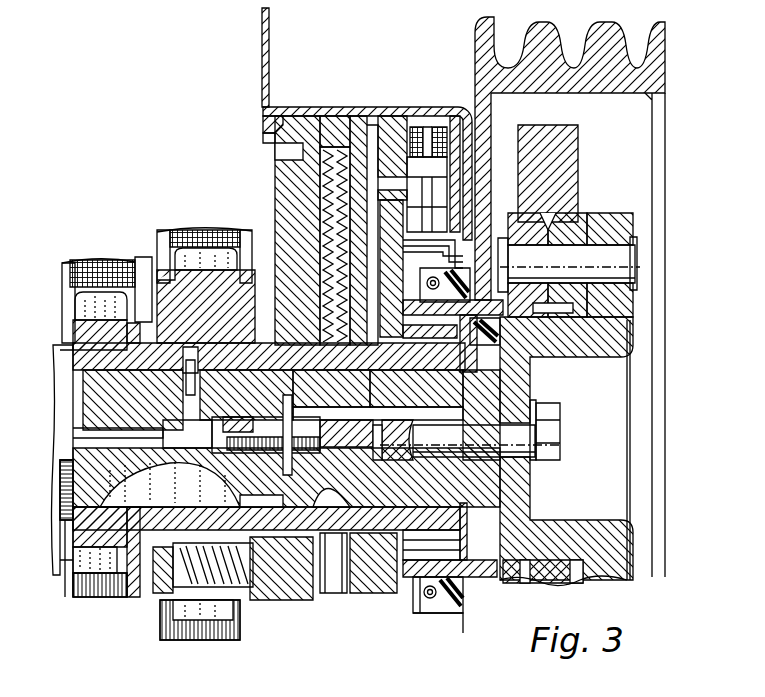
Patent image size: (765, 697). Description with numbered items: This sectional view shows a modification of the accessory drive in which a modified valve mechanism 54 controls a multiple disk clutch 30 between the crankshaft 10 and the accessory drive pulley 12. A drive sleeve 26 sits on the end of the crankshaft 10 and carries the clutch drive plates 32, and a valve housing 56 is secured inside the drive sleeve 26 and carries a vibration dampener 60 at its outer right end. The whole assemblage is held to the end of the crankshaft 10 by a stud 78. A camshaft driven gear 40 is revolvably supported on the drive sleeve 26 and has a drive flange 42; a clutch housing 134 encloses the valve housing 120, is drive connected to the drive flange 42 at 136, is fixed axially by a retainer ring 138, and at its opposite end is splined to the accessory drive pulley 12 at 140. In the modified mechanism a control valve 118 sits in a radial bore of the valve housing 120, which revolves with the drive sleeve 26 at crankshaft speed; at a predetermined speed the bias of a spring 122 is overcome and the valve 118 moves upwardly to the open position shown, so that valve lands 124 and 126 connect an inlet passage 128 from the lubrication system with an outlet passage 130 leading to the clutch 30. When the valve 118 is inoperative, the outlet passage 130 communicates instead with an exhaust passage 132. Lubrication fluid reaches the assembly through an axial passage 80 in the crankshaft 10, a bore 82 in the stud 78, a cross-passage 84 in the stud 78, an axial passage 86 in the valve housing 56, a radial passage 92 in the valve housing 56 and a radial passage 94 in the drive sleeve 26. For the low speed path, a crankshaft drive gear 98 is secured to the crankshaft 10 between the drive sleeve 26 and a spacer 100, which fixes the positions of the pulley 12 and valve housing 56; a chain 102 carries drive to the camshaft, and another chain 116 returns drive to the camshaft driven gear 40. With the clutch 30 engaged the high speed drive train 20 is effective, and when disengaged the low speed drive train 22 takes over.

The crankshaft 10 is at (63, 398).
The accessory drive pulley 12 is at (663, 70).
The high speed drive train 20 is at (328, 358).
The low speed drive train 22 is at (71, 607).
The drive sleeve 26 is at (437, 528).
The multiple disk clutch 30 is at (334, 297).
The drive plates 32 is at (325, 595).
The camshaft driven gear 40 is at (243, 615).
The drive flange 42 is at (275, 222).
The valve mechanism 54 is at (436, 100).
The valve housing 56 is at (612, 574).
The vibration dampener 60 is at (570, 199).
The stud 78 is at (548, 433).
The axial passage 80 is at (195, 430).
The bore 82 is at (318, 462).
The cross-passage 84 is at (395, 455).
The axial passage 86 is at (470, 458).
The radial passage 92 is at (388, 388).
The radial passage 94 is at (358, 365).
The crankshaft drive gear 98 is at (78, 548).
The spacer 100 is at (470, 386).
The chain 102 is at (88, 592).
The chain 116 is at (190, 640).
The control valve 118 is at (417, 200).
The valve housing 120 is at (392, 124).
The spring 122 is at (463, 112).
The valve land 124 is at (440, 166).
The valve land 126 is at (448, 207).
The inlet passage 128 is at (388, 189).
The outlet passage 130 is at (345, 197).
The exhaust passage 132 is at (528, 213).
The clutch housing 134 is at (318, 111).
The drive connection 136 is at (268, 118).
The retainer ring 138 is at (268, 138).
The spline connection 140 is at (470, 350).